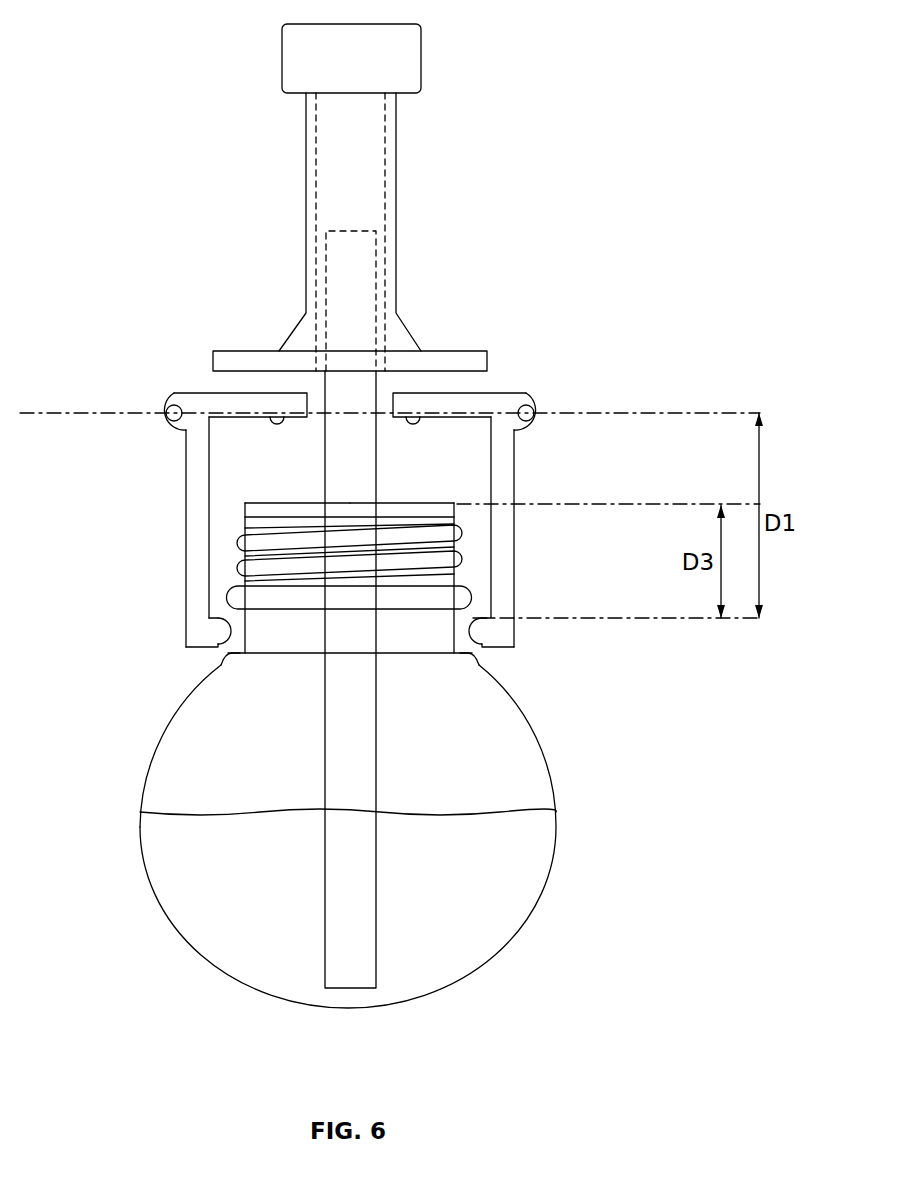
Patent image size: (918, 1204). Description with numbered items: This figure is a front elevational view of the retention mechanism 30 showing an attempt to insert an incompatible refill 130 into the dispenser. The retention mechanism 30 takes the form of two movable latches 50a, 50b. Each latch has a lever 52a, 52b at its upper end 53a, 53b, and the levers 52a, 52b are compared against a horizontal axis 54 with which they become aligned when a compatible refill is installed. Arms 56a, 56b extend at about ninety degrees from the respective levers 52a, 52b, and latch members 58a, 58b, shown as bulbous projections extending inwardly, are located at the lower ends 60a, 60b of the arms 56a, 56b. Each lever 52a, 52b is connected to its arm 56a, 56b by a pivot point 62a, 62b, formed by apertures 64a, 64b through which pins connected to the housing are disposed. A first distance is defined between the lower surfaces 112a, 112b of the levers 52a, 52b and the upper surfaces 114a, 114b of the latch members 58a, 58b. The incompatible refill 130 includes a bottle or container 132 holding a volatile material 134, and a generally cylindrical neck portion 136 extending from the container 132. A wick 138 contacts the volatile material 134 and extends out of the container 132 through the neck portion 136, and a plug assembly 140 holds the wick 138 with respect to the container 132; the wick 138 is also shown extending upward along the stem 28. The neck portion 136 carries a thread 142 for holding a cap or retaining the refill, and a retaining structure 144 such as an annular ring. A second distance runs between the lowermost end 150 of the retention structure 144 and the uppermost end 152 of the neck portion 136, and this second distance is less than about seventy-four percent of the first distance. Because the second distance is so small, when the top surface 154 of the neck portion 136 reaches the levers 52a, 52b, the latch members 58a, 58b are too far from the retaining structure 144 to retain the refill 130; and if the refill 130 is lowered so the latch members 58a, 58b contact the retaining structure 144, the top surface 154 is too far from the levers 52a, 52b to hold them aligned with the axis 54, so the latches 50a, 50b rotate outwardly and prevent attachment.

The stem 28 is at (375, 166).
The retention mechanism 30 is at (606, 351).
The horizontal axis 54 is at (647, 414).
The movable latch 50a is at (171, 500).
The movable latch 50b is at (547, 518).
The lever 52a is at (243, 392).
The lever 52b is at (473, 392).
The pivot point 62a is at (167, 394).
The pivot point 62b is at (540, 392).
The aperture 64a is at (168, 420).
The aperture 64b is at (533, 420).
The lower surface of lever 112a is at (282, 420).
The lower surface of lever 112b is at (412, 418).
The upper end 53a is at (200, 432).
The upper end 53b is at (499, 428).
The arm 56a is at (183, 524).
The arm 56b is at (515, 530).
The lower end 60a is at (194, 607).
The lower end 60b is at (505, 605).
The upper surface of latch member 114a is at (220, 641).
The upper surface of latch member 114b is at (485, 643).
The wick 138 is at (353, 968).
The incompatible refill 130 is at (573, 810).
The plug assembly 140 is at (440, 502).
The top surface of neck portion 154 is at (278, 502).
The uppermost end of neck portion 152 is at (413, 502).
The thread 142 is at (237, 565).
The neck portion 136 is at (462, 550).
The retaining structure 144 is at (192, 604).
The lowermost end of retention structure 150 is at (448, 645).
The latch member 58a is at (222, 650).
The latch member 58b is at (488, 650).
The volatile material 134 is at (160, 875).
The bottle or container 132 is at (527, 898).